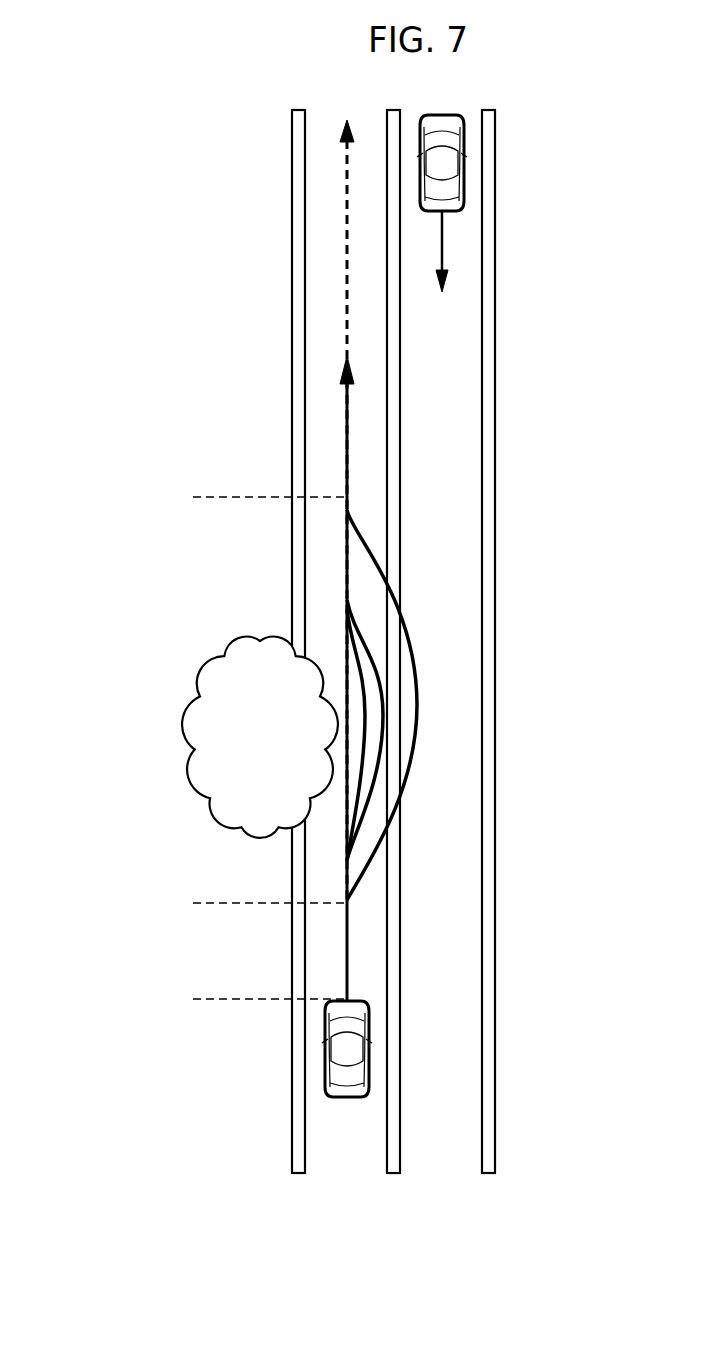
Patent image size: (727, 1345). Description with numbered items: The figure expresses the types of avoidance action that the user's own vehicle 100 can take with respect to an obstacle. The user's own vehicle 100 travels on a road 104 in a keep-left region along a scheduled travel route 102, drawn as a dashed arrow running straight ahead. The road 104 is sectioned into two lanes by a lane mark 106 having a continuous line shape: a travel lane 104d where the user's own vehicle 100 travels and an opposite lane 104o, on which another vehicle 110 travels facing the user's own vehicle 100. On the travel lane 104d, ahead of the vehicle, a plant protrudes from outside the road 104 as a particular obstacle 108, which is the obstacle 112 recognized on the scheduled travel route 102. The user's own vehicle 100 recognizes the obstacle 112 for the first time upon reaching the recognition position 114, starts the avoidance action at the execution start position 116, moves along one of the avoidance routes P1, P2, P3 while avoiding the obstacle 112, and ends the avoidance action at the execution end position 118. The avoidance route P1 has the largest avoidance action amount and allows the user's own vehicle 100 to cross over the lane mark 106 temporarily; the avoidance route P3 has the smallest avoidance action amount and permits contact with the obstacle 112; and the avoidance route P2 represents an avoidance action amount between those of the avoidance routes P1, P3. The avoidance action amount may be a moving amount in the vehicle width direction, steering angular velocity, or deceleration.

The user's own vehicle 100 is at (330, 1052).
The scheduled travel route 102 is at (345, 322).
The road 104 is at (473, 1225).
The travel lane 104d is at (360, 1148).
The opposite lane 104o is at (450, 1148).
The lane mark 106 is at (395, 478).
The particular obstacle 108 is at (183, 718).
The obstacle 112 is at (194, 737).
The other vehicle 110 is at (462, 152).
The recognition position 114 is at (223, 997).
The execution start position 116 is at (223, 901).
The execution end position 118 is at (223, 495).
The avoidance route P1 is at (417, 673).
The avoidance route P2 is at (363, 632).
The avoidance route P3 is at (363, 763).